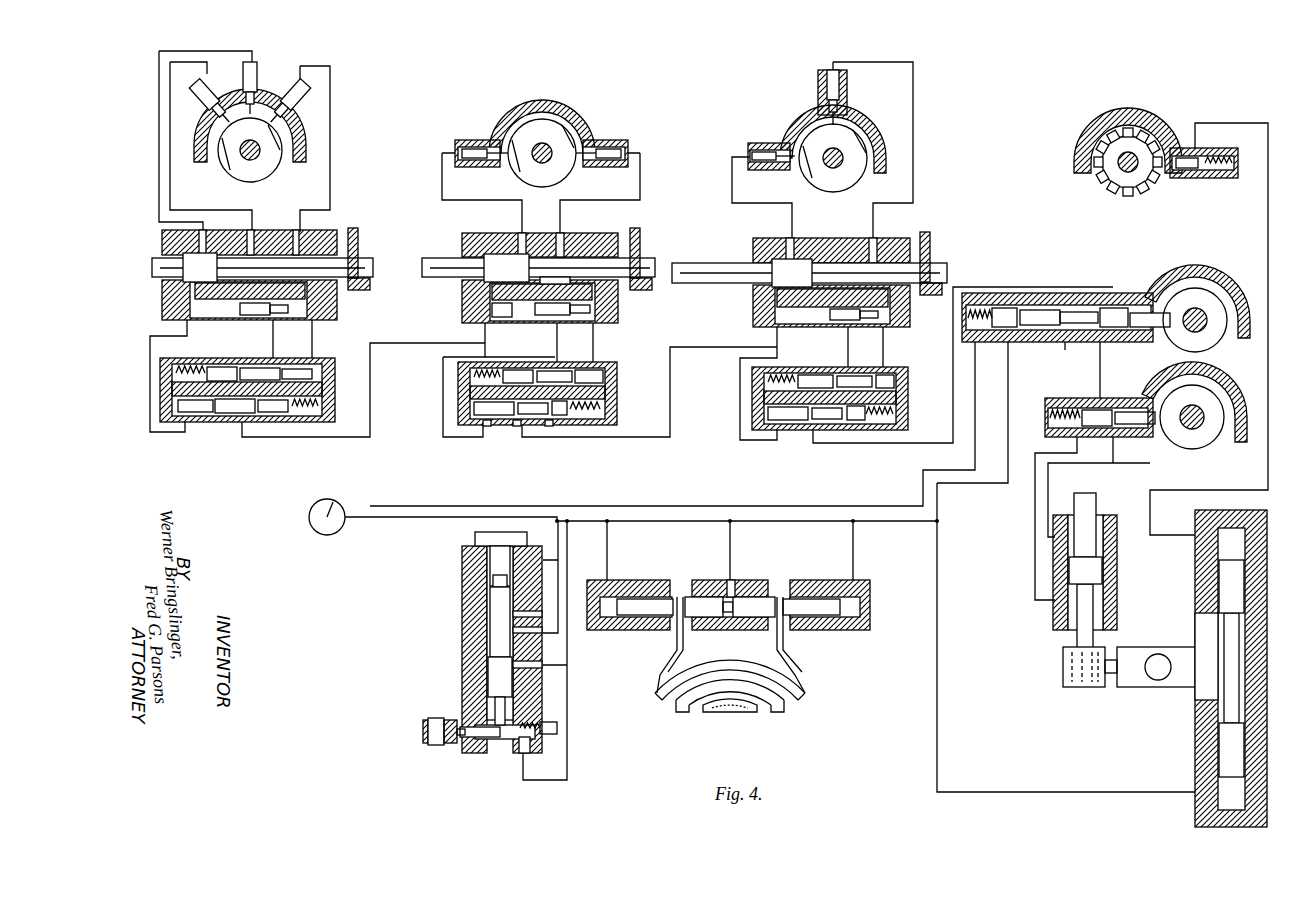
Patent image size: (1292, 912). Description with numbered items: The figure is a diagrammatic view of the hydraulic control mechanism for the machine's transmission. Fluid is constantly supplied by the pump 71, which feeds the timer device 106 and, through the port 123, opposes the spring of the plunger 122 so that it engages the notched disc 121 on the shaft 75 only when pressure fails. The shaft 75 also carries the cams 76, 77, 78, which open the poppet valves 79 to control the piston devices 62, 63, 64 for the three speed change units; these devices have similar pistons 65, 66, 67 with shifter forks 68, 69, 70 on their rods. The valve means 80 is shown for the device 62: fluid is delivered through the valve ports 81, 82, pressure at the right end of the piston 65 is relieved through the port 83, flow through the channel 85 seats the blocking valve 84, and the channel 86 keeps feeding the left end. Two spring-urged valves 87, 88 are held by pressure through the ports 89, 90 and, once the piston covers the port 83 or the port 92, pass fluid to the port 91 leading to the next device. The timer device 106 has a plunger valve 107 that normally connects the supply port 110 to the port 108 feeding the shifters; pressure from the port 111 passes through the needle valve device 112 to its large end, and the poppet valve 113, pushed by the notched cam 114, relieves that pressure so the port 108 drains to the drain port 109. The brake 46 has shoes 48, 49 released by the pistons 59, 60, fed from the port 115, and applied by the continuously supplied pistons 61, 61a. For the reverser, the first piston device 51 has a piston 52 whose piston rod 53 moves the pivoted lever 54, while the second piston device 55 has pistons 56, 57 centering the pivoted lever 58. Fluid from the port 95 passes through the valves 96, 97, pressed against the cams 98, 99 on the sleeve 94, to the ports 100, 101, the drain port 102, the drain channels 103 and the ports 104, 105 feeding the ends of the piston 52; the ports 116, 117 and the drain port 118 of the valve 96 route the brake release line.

The brake 46 is at (738, 700).
The brake shoe 48 is at (657, 697).
The brake shoe 49 is at (810, 698).
The first piston device 51 is at (1112, 599).
The piston 52 is at (1103, 570).
The piston rod 53 is at (1082, 630).
The pivoted lever 54 is at (1070, 683).
The second piston device 55 is at (1197, 706).
The piston 56 is at (1227, 590).
The piston 57 is at (1227, 747).
The pivoted lever 58 is at (1130, 675).
The piston 59 is at (698, 602).
The piston 60 is at (753, 602).
The piston 61 is at (637, 603).
The piston 61a is at (812, 607).
The piston device 62 is at (490, 232).
The piston device 63 is at (272, 228).
The piston device 64 is at (775, 237).
The piston 65 is at (520, 262).
The piston 66 is at (210, 262).
The piston 67 is at (808, 252).
The shifter fork 68 is at (635, 250).
The shifter fork 69 is at (356, 240).
The shifter fork 70 is at (930, 250).
The pump 71 is at (322, 515).
The shaft 75 is at (256, 153).
The cam 76 is at (520, 168).
The cam 77 is at (228, 158).
The cam 78 is at (813, 173).
The poppet valve 79 is at (222, 108).
The valve means 80 is at (322, 338).
The valve port 81 is at (571, 342).
The valve port 82 is at (593, 340).
The port 83 is at (563, 237).
The blocking valve 84 is at (556, 284).
The channel 85 is at (600, 311).
The channel 86 is at (488, 308).
The valve 87 is at (600, 381).
The valve 88 is at (492, 406).
The port 89 is at (603, 363).
The port 90 is at (487, 426).
The port 91 is at (517, 426).
The passage 92 is at (549, 426).
The sleeve 94 is at (1232, 292).
The port 95 is at (1118, 294).
The valve 96 is at (1150, 294).
The valve 97 is at (1140, 400).
The cam 98 is at (1220, 283).
The cam 99 is at (1213, 407).
The port 100 is at (1101, 342).
The supply port 101 is at (1100, 400).
The drain port 102 is at (1065, 342).
The drain channels 103 is at (1047, 418).
The port 104 is at (1078, 446).
The port 105 is at (1113, 434).
The timer device 106 is at (463, 627).
The plunger valve 107 is at (497, 669).
The port 108 is at (537, 636).
The drain port 109 is at (540, 610).
The supply port 110 is at (537, 667).
The port 111 is at (520, 757).
The needle valve device 112 is at (540, 737).
The poppet valve 113 is at (480, 737).
The notched cam 114 is at (423, 733).
The port 115 is at (731, 587).
The port 116 is at (1010, 343).
The port 117 is at (975, 343).
The drain port 118 is at (962, 351).
The disc 121 is at (1137, 197).
The spring pressed plunger 122 is at (1182, 178).
The port 123 is at (1190, 148).